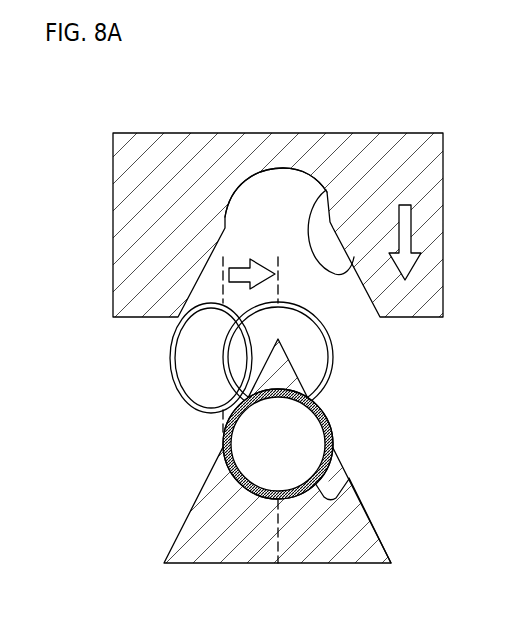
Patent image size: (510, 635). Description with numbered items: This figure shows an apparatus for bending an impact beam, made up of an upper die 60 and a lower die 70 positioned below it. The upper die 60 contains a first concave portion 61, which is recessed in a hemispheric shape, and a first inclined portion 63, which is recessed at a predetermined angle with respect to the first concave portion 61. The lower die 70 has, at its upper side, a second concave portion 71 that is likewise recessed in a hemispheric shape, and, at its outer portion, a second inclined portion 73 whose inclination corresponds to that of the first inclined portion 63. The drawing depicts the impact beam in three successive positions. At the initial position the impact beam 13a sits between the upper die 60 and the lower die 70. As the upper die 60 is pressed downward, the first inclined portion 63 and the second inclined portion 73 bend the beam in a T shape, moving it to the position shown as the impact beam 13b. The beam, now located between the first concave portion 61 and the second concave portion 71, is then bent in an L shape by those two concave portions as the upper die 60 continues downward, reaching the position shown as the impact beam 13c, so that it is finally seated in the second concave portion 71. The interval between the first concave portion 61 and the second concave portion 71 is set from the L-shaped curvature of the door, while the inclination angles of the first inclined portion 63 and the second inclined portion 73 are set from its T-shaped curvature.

The upper die 60 is at (133, 203).
The first concave portion 61 is at (283, 167).
The first inclined portion 63 is at (327, 197).
The impact beam at initial position 13a is at (170, 357).
The impact beam at T-bent position 13b is at (334, 361).
The impact beam at L-bent position 13c is at (328, 418).
The lower die 70 is at (218, 478).
The second concave portion 71 is at (340, 494).
The second inclined portion 73 is at (374, 521).